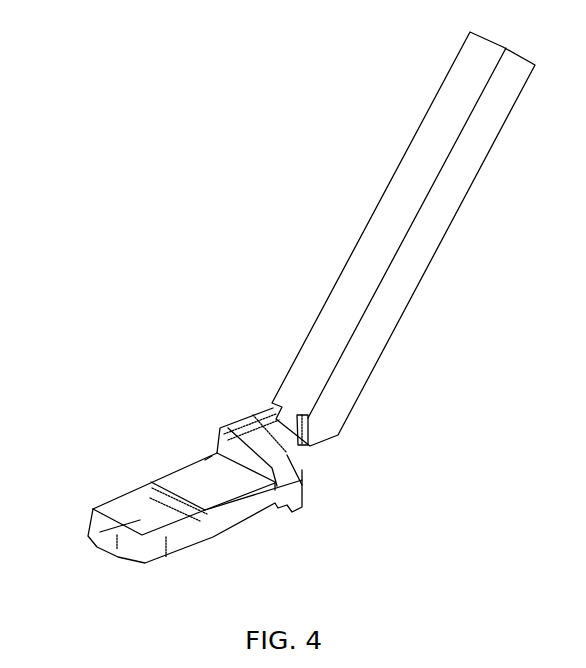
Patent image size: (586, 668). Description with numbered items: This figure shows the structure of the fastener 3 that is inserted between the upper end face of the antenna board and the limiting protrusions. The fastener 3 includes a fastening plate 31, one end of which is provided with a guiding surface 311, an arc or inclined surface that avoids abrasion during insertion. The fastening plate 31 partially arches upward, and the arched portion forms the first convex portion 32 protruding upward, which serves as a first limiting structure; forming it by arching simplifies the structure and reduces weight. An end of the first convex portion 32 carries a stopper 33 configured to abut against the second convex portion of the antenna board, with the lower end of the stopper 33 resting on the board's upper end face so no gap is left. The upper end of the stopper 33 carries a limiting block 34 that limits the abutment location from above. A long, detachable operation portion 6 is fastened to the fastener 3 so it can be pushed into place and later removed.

The fastener 3 is at (133, 415).
The operation portion 6 is at (390, 213).
The fastening plate 31 is at (166, 520).
The guiding surface 311 is at (103, 537).
The first convex portion 32 is at (195, 480).
The stopper 33 is at (298, 498).
The limiting block 34 is at (312, 442).